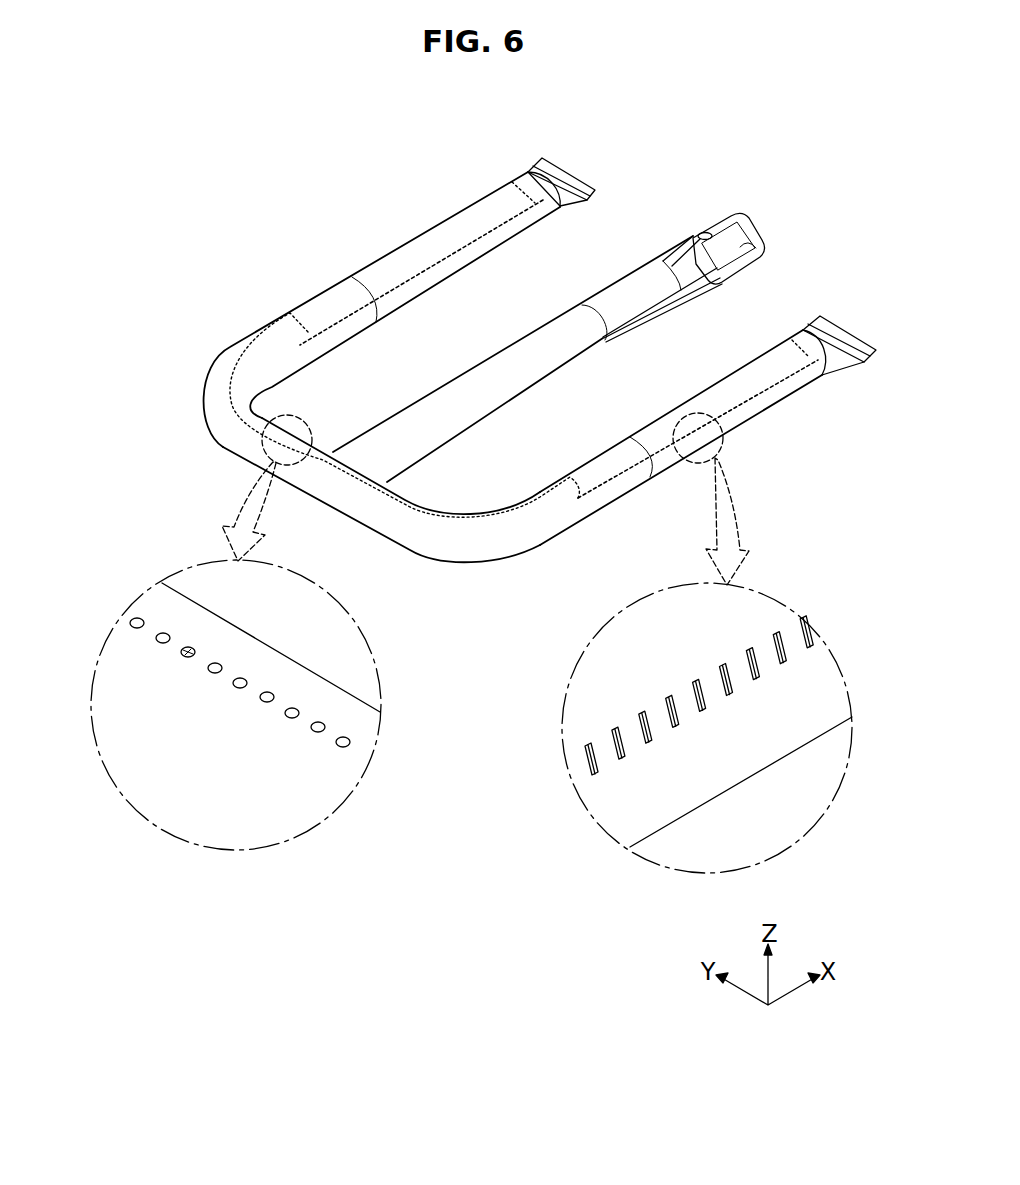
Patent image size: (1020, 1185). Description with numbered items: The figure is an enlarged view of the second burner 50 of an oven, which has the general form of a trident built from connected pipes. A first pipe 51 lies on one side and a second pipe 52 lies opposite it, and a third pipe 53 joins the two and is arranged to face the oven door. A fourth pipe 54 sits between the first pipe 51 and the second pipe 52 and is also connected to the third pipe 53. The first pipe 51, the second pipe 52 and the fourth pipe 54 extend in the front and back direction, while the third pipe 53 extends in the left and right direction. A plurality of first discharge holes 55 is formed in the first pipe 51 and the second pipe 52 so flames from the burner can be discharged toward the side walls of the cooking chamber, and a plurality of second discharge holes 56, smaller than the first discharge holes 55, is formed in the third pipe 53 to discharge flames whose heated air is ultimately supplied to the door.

The second burner 50 is at (616, 157).
The first pipe 51 is at (464, 210).
The second pipe 52 is at (717, 400).
The third pipe 53 is at (352, 492).
The fourth pipe 54 is at (596, 297).
The first discharge holes 55 is at (757, 660).
The second discharge holes 56 is at (185, 651).